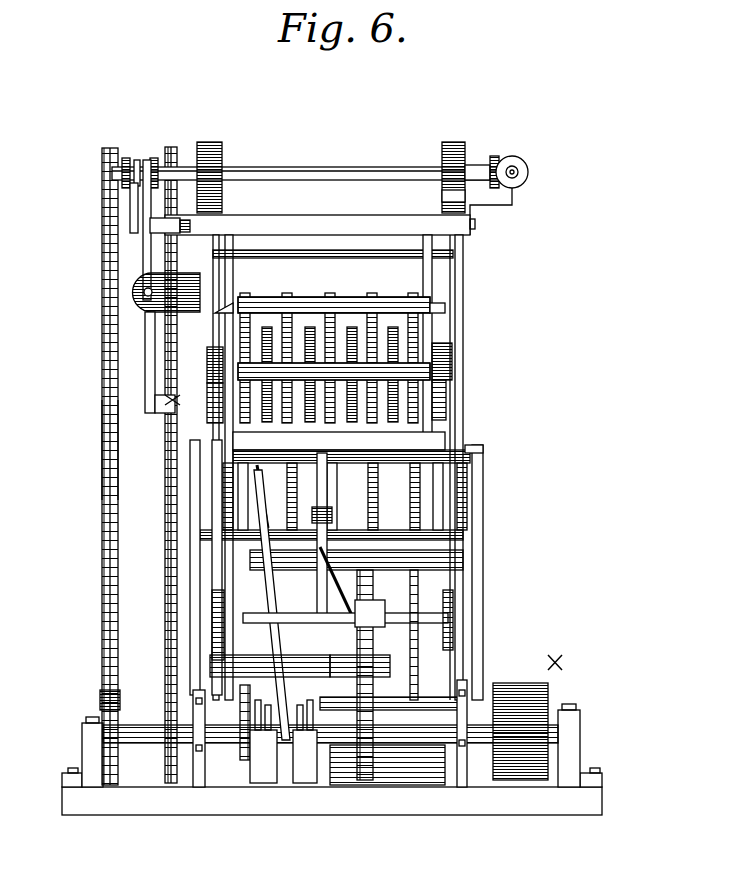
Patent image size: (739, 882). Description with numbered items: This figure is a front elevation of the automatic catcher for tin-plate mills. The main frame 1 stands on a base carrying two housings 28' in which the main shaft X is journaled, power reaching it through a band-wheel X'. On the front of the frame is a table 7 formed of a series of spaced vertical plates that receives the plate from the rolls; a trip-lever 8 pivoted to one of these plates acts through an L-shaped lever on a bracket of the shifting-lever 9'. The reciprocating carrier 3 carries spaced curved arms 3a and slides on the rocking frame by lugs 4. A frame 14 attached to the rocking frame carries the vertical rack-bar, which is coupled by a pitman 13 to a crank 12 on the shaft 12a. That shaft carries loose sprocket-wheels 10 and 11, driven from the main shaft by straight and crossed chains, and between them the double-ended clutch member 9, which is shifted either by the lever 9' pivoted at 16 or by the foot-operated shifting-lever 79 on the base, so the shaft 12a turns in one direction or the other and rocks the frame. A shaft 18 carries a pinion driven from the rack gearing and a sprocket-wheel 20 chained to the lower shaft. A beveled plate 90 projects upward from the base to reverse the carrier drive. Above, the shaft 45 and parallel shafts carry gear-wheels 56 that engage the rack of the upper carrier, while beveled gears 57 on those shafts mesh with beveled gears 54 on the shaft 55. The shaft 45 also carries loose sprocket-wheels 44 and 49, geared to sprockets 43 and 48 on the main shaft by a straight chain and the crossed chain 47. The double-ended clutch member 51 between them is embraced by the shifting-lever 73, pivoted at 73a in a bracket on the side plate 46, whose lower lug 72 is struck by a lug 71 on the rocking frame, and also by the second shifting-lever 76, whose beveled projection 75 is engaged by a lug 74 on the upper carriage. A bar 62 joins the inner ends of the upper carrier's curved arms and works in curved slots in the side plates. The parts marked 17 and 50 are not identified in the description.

The main frame 1 is at (325, 457).
The carrier 3 is at (312, 327).
The curved arms 3a is at (350, 415).
The lugs 4 is at (207, 348).
The table 7 is at (345, 470).
The trip-lever 8 is at (332, 515).
The clutch member 9 is at (298, 756).
The shifting-lever 9' is at (289, 583).
The sprocket-wheel 10 is at (248, 755).
The sprocket-wheel 11 is at (287, 605).
The crank 12 is at (195, 688).
The shaft 12a is at (385, 745).
The pitman 13 is at (190, 577).
The frame 14 is at (440, 458).
The pivot 16 is at (336, 537).
The arm 17 is at (273, 520).
The shaft 18 is at (215, 612).
The sprocket-wheel 20 is at (375, 600).
The housings 28' is at (330, 745).
The sprocket 43 is at (100, 703).
The sprocket-wheel 44 is at (102, 165).
The shaft 45 is at (257, 167).
The side plate 46 is at (442, 197).
The crossed chain 47 is at (100, 422).
The sprocket 48 is at (168, 702).
The sprocket-wheel 49 is at (172, 147).
The chain 50 is at (170, 474).
The clutch member 51 is at (133, 158).
The beveled gears 54 is at (522, 160).
The shaft 55 is at (520, 174).
The gear-wheels 56 is at (210, 142).
The beveled gears 57 is at (493, 158).
The bar 62 is at (218, 310).
The lug 71 is at (183, 390).
The lug 72 is at (158, 412).
The shifting-lever 73 is at (145, 358).
The pivot 73a is at (140, 292).
The lug 74 is at (190, 226).
The beveled projection 75 is at (143, 232).
The shifting-lever 76 is at (130, 208).
The shifting-lever 79 is at (252, 783).
The beveled plate 90 is at (335, 708).
The main shaft X is at (539, 728).
The band-wheel X' is at (558, 663).